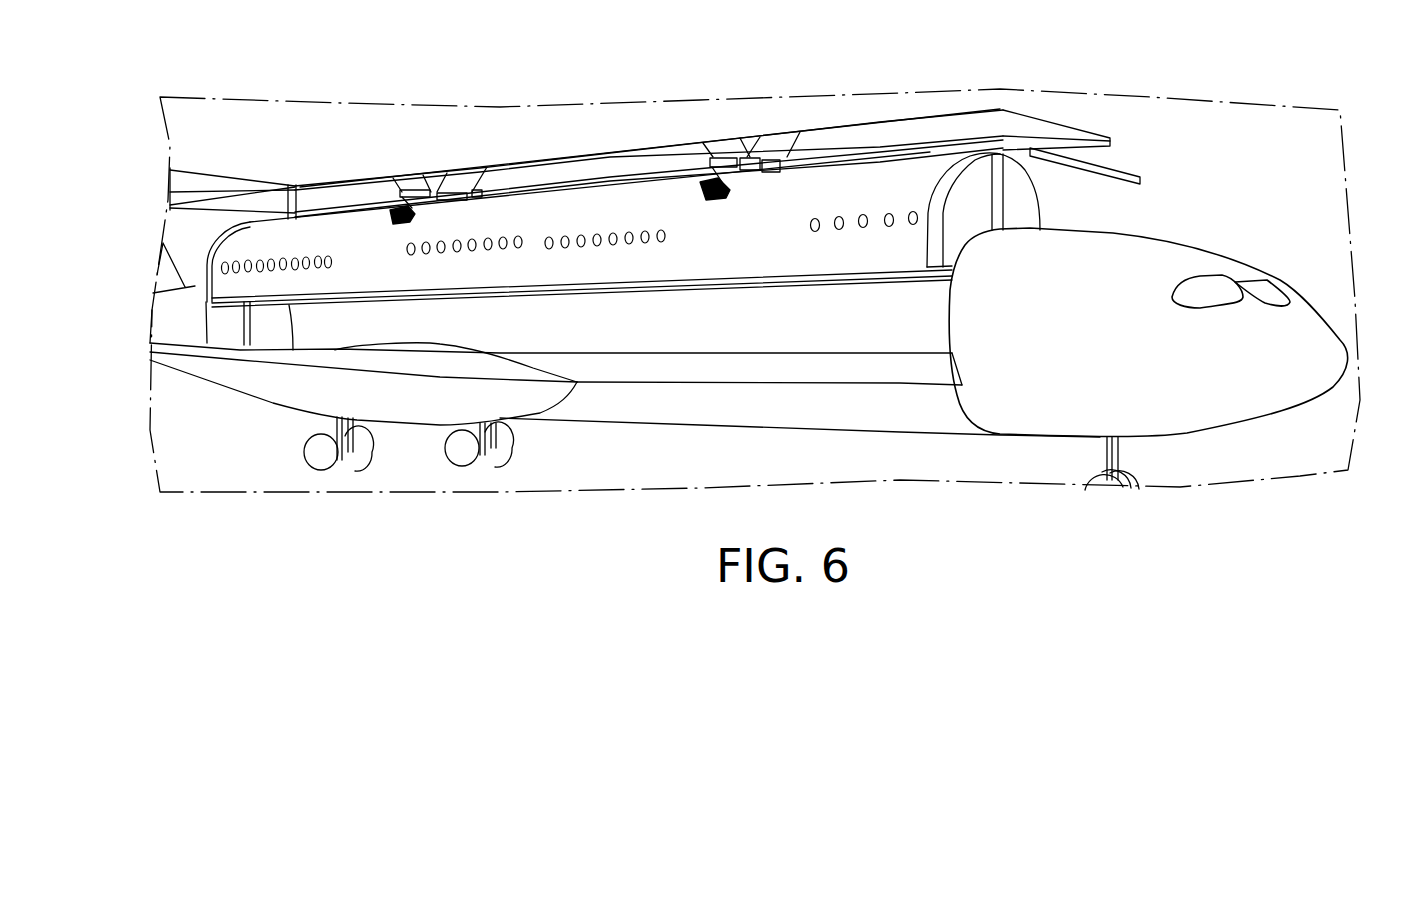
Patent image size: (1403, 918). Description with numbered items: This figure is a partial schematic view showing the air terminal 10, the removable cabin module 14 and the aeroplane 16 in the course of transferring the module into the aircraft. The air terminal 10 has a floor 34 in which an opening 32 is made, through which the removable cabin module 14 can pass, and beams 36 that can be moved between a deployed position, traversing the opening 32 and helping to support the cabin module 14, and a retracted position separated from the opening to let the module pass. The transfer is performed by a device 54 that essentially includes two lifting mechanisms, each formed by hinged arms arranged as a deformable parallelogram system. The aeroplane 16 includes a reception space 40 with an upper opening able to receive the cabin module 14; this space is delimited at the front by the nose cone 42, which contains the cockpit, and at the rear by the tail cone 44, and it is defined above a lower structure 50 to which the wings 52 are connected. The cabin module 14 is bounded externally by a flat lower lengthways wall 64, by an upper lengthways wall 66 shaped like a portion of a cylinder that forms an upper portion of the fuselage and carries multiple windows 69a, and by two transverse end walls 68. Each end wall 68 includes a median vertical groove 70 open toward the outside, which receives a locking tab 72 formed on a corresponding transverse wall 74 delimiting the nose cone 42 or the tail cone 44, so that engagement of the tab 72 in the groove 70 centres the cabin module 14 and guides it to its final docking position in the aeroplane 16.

The air terminal 10 is at (200, 220).
The removable cabin module 14 is at (860, 178).
The aeroplane 16 is at (1273, 260).
The opening 32 is at (525, 172).
The floor 34 is at (1110, 113).
The beams 36 is at (1120, 178).
The reception space 40 is at (786, 335).
The nose cone 42 is at (1133, 330).
The tail cone 44 is at (165, 313).
The lower structure 50 is at (707, 403).
The wings 52 is at (423, 388).
The device 54 is at (490, 182).
The flat lower lengthways wall 64 is at (640, 287).
The upper lengthways wall 66 is at (697, 230).
The end walls 68 is at (213, 242).
The windows 69a is at (245, 252).
The median vertical groove 70 is at (1000, 193).
The locking tab 72 is at (242, 334).
The transverse wall 74 is at (220, 327).